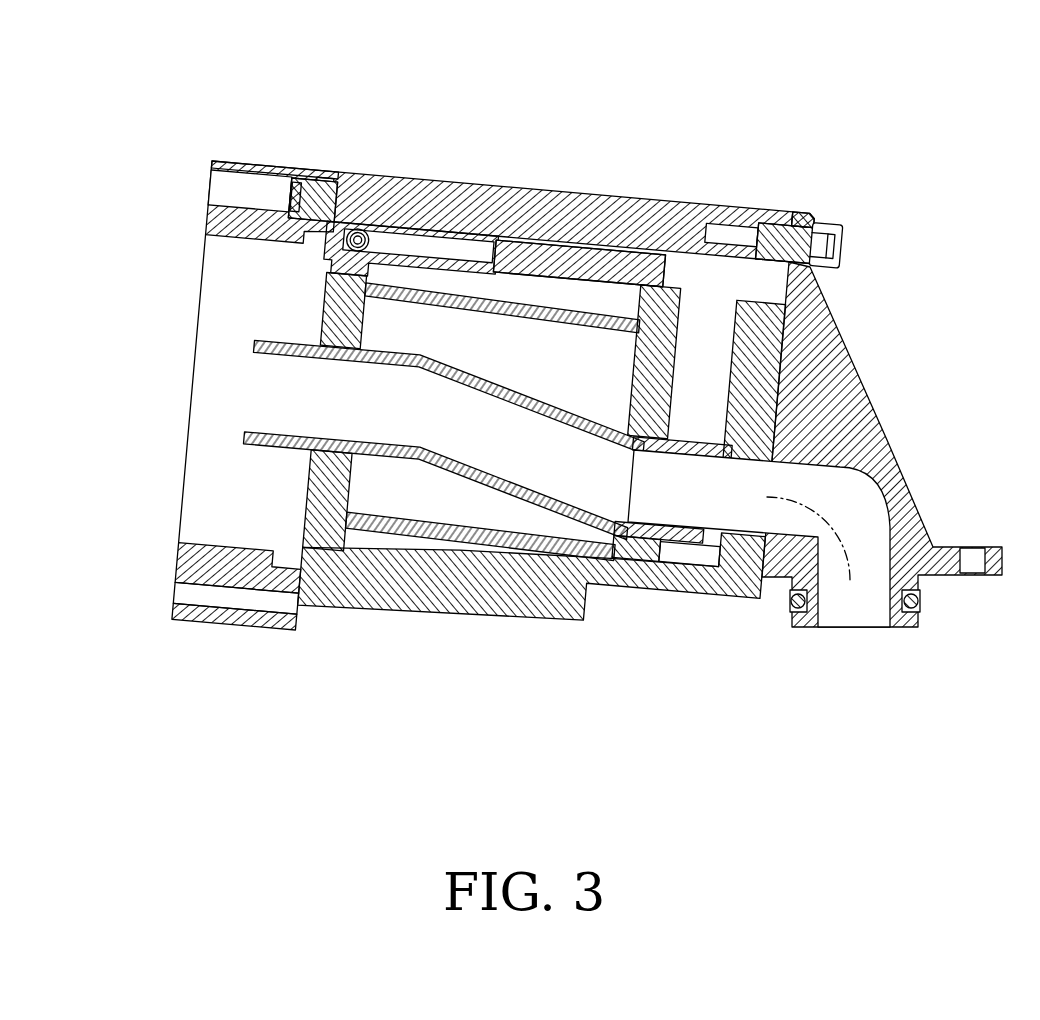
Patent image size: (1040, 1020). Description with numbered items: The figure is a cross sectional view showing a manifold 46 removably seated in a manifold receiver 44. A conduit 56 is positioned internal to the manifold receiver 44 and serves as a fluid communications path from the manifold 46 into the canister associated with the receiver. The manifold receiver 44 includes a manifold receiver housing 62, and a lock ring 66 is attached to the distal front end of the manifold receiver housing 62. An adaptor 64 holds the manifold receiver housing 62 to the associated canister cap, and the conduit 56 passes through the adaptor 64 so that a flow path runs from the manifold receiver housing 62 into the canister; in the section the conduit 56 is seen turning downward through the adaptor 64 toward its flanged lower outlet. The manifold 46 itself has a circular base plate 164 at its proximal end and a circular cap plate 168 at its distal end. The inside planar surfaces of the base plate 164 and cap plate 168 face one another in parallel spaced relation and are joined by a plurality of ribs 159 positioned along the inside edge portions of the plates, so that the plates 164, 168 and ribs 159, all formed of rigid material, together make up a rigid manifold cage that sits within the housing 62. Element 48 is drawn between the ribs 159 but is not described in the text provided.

The manifold receiver 44 is at (576, 193).
The manifold 46 is at (322, 299).
The converging duct 48 is at (557, 397).
The conduit 56 is at (845, 495).
The manifold receiver housing 62 is at (437, 610).
The adaptor 64 is at (868, 393).
The lock ring 66 is at (252, 162).
The ribs 159 is at (480, 306).
The circular base plate 164 is at (672, 347).
The circular cap plate 168 is at (327, 477).